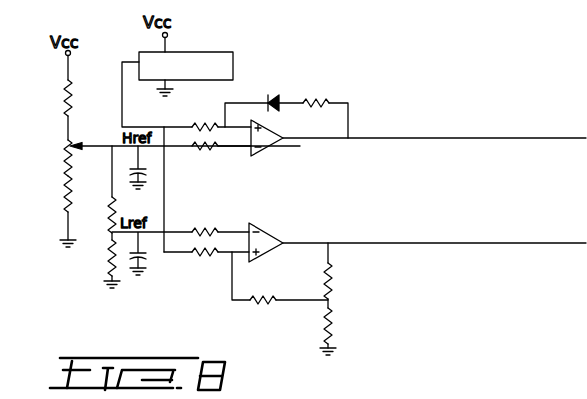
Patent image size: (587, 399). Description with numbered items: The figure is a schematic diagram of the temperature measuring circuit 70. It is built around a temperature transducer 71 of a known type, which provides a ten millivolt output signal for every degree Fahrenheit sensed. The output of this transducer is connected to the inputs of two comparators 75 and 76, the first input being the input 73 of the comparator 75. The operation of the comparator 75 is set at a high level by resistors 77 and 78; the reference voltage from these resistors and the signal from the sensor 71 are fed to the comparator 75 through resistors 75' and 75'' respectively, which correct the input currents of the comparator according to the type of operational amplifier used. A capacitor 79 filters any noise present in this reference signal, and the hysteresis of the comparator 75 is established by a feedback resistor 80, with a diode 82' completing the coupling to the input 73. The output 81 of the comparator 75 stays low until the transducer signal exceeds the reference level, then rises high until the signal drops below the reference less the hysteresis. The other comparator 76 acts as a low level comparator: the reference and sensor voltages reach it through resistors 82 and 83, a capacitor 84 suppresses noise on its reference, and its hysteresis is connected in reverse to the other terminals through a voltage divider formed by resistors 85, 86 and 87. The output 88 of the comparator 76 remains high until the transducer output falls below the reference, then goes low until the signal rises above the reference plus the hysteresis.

The temperature measuring circuit 70 is at (249, 63).
The temperature transducer 71 is at (205, 53).
The input 73 is at (231, 125).
The comparator 75 is at (270, 157).
The resistor 75' is at (221, 111).
The resistor 75'' is at (221, 163).
The comparator 76 is at (262, 224).
The resistor 77 is at (79, 95).
The resistor 78 is at (74, 152).
The capacitor 79 is at (150, 168).
The feedback resistor 80 is at (314, 100).
The output 81 is at (350, 141).
The resistor 82 is at (220, 219).
The diode 82' is at (285, 83).
The resistor 83 is at (205, 258).
The capacitor 84 is at (150, 258).
The resistor 85 is at (268, 303).
The resistor 86 is at (333, 278).
The resistor 87 is at (333, 322).
The output 88 is at (376, 243).